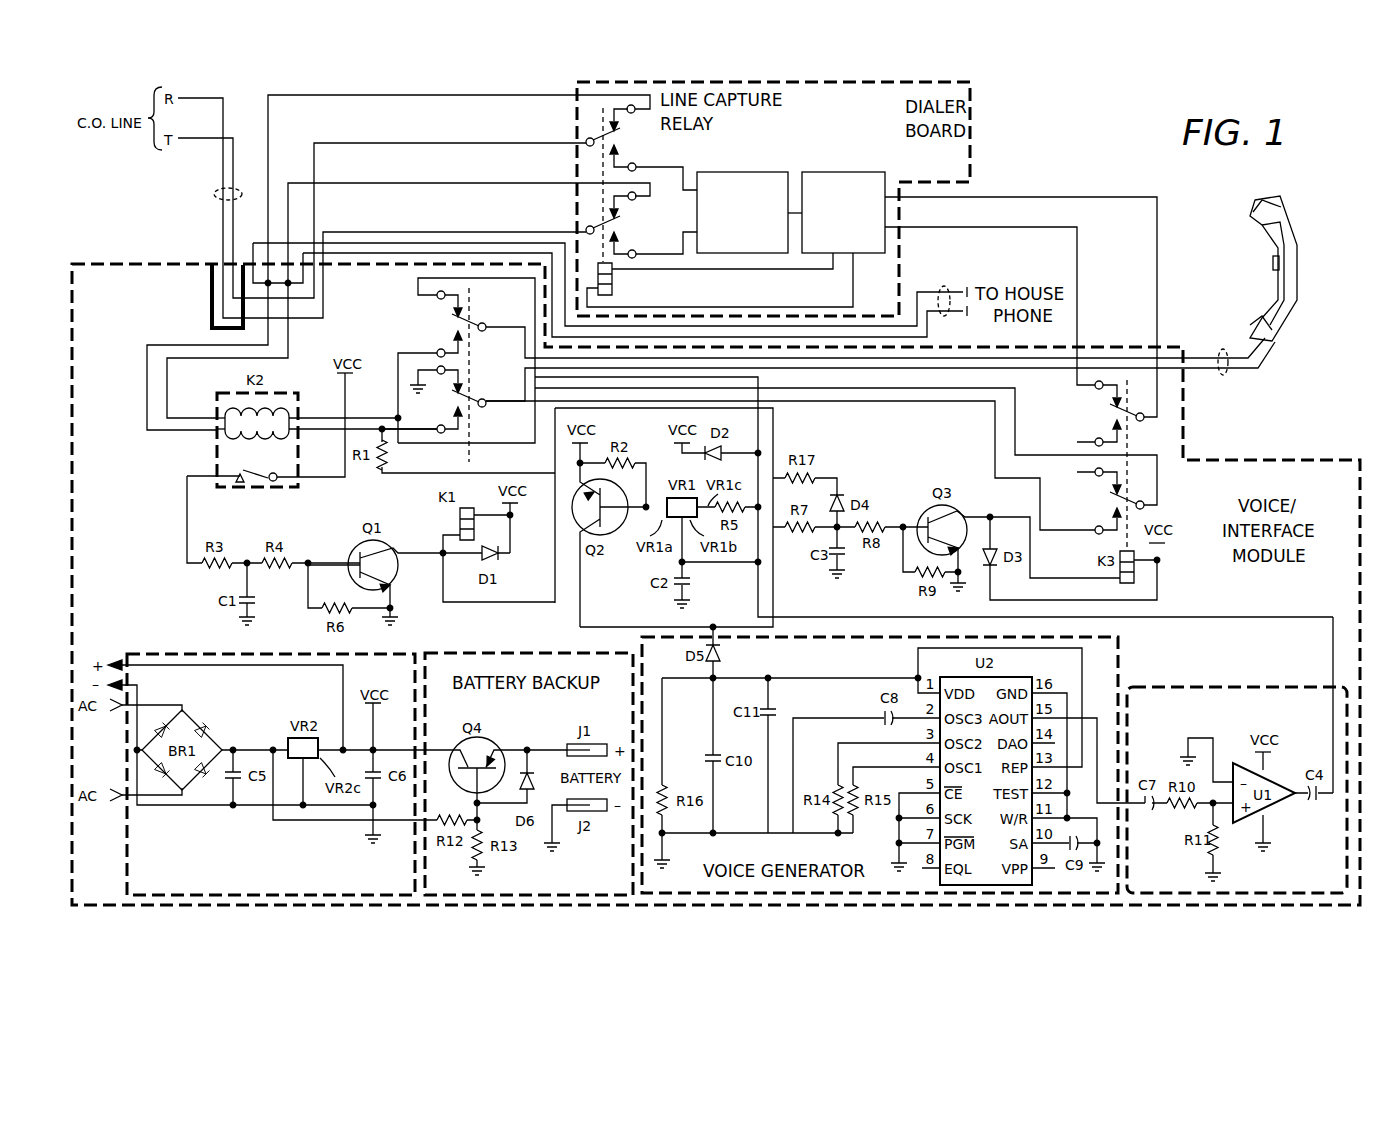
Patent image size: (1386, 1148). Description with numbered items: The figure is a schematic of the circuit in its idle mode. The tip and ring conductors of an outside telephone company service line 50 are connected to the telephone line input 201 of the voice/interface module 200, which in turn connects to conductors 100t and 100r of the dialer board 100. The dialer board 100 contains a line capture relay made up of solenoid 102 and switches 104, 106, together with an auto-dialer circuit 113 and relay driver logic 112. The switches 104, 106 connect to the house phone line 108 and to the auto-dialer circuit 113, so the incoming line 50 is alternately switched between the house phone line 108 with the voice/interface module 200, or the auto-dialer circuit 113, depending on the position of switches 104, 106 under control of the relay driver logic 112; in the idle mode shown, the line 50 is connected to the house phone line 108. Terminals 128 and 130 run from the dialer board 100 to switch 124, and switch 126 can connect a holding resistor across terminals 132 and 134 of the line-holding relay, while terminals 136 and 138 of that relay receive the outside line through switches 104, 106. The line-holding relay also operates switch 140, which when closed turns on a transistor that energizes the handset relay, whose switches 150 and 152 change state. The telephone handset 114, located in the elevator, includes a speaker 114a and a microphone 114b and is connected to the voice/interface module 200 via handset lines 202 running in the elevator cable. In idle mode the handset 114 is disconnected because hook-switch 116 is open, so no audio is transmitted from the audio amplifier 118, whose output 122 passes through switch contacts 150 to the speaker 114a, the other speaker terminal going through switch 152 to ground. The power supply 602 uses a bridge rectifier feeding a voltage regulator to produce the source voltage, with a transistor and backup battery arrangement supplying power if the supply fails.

The outside telephone company service line 50 is at (216, 194).
The telephone line input 201 is at (214, 263).
The tip conductor 100t is at (466, 142).
The ring conductor 100r is at (466, 231).
The dialer board 100 is at (946, 165).
The switch 104 is at (638, 140).
The switch 106 is at (638, 228).
The solenoid 102 is at (613, 286).
The auto-dialer circuit 113 is at (775, 171).
The relay driver logic 112 is at (841, 171).
The house phone line 108 is at (947, 285).
The terminal 130 is at (1130, 197).
The terminal 128 is at (1079, 270).
The telephone handset 114 is at (1298, 262).
The speaker 114a is at (1256, 210).
The microphone 114b is at (1256, 326).
The hook-switch 116 is at (1270, 262).
The handset lines 202 is at (1228, 376).
The switch contacts 150 is at (498, 311).
The switch 152 is at (498, 387).
The terminal 136 is at (216, 418).
The terminal 132 is at (296, 418).
The terminal 138 is at (216, 430).
The terminal 134 is at (296, 430).
The switch 140 is at (246, 480).
The switch 124 is at (1108, 412).
The switch 126 is at (1108, 498).
The voice/interface module 200 is at (1291, 592).
The output 122 is at (1263, 642).
The audio amplifier 118 is at (1330, 871).
The power supply 602 is at (291, 885).